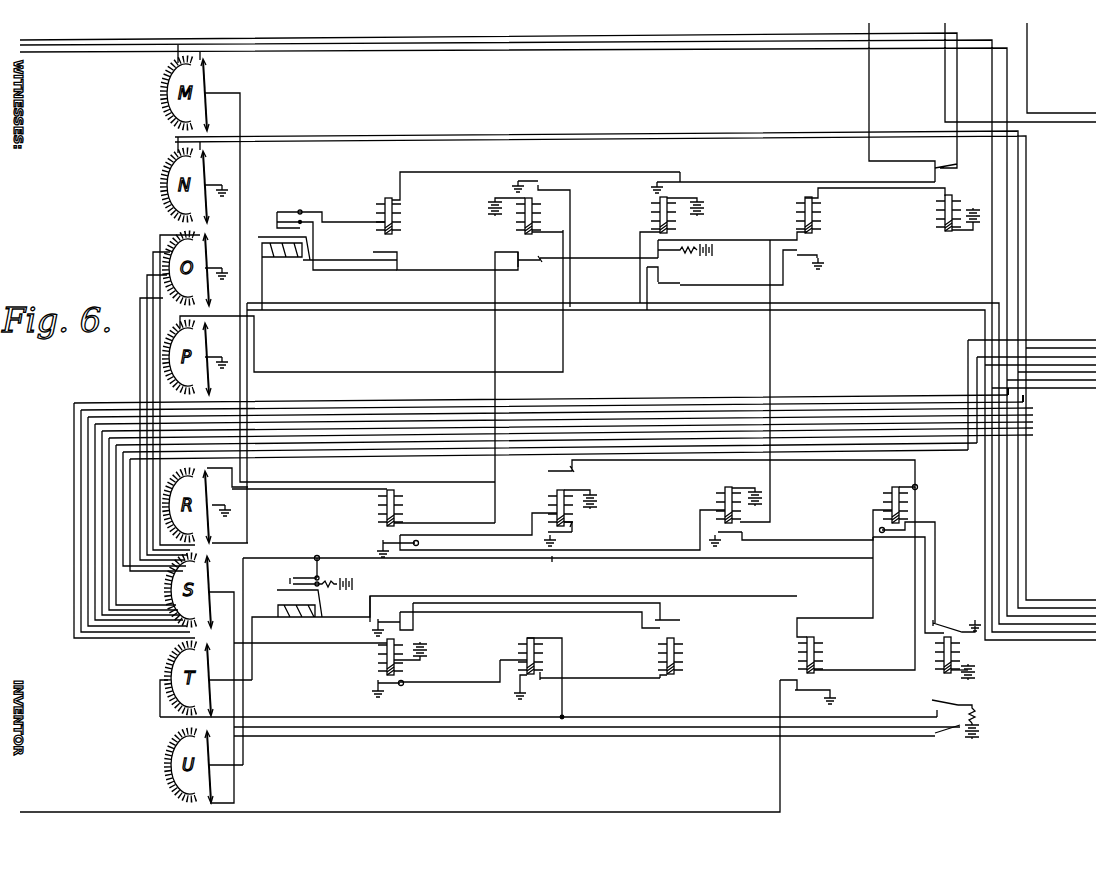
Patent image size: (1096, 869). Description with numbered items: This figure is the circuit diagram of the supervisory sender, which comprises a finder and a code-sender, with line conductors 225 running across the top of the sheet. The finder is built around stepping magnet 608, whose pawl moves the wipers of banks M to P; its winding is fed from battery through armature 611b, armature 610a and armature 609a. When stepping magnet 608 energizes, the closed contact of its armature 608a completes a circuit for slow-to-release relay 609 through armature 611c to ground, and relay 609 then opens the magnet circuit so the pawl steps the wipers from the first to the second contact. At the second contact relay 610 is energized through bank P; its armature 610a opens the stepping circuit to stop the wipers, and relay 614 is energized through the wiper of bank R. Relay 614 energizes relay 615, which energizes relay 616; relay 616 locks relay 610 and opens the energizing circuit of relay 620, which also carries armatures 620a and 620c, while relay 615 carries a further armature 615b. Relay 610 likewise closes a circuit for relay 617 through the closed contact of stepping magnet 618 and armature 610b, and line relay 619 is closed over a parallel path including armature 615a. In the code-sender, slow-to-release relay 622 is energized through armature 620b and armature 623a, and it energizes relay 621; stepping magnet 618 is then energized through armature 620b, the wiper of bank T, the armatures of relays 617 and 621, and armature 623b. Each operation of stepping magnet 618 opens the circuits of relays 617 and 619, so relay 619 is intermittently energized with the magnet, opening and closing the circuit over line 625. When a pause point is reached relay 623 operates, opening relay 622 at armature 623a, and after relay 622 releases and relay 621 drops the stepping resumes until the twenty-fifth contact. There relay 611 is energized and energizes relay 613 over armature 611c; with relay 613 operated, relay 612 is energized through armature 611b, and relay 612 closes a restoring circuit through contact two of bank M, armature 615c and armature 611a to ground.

The line conductor 225 is at (76, 46).
The stepping magnet 608 is at (296, 258).
The armature 608a is at (292, 210).
The slow-to-release relay 609 is at (400, 216).
The armature 609a is at (397, 254).
The relay 610 is at (520, 228).
The armature 610a is at (526, 266).
The armature 610b is at (548, 184).
The relay 611 is at (652, 212).
The armature 611a is at (672, 284).
The armature 611b is at (652, 250).
The armature 611c is at (686, 176).
The relay 612 is at (797, 212).
The relay 613 is at (935, 212).
The relay 614 is at (408, 510).
The relay 615 is at (555, 498).
The armature 615a is at (552, 566).
The relay contact 615b is at (582, 536).
The armature 615c is at (548, 472).
The relay 616 is at (715, 496).
The relay 617 is at (886, 496).
The stepping magnet 618 is at (314, 617).
The line relay 619 is at (797, 652).
The relay 620 is at (946, 674).
The relay contact 620a is at (944, 734).
The armature 620b is at (966, 702).
The relay contact 620c is at (960, 628).
The relay 621 is at (663, 652).
The slow-to-release relay 622 is at (520, 652).
The relay 623 is at (380, 660).
The armature 623a is at (396, 688).
The armature 623b is at (400, 610).
The line 625 is at (636, 806).